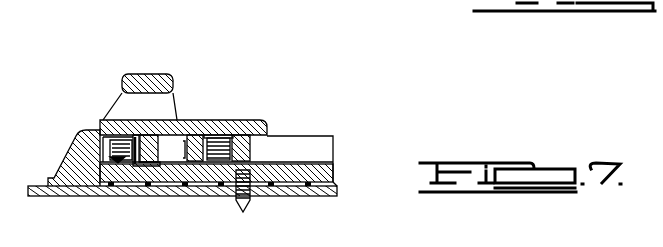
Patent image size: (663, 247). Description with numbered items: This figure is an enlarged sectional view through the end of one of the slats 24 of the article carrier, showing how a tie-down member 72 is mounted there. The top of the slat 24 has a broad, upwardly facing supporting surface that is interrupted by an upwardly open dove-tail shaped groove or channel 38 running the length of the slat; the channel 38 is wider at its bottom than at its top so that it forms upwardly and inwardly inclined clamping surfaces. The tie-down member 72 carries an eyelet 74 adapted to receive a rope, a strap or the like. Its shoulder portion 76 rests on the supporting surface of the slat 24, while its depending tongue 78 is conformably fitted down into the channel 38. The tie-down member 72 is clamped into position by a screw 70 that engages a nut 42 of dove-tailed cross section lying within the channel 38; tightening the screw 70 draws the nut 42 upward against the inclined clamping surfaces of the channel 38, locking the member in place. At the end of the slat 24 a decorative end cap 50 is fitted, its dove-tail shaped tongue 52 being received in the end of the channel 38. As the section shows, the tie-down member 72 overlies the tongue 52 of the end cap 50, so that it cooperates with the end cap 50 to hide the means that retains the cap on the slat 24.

The slat 24 is at (332, 172).
The dove-tail shaped groove 38 is at (320, 145).
The nut 42 is at (252, 150).
The decorative end cap 50 is at (81, 145).
The dove-tail shaped tongue 52 is at (125, 162).
The screw 70 is at (215, 138).
The tie-down member 72 is at (147, 73).
The eyelet 74 is at (118, 100).
The shoulder portion 76 is at (257, 124).
The depending tongue 78 is at (162, 163).